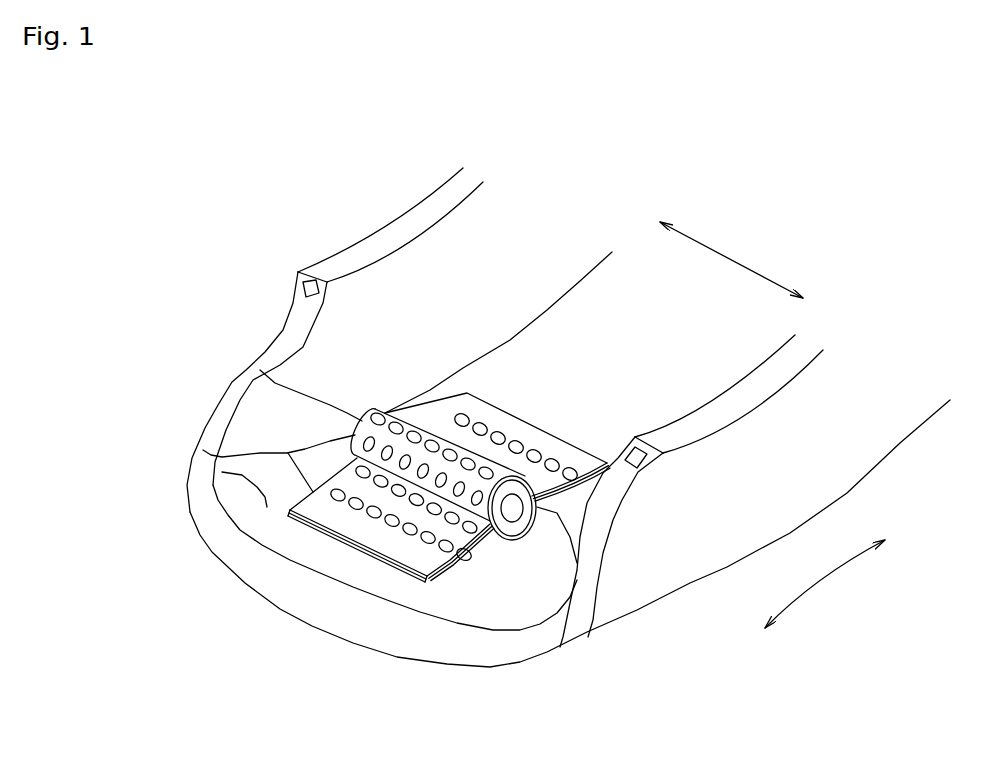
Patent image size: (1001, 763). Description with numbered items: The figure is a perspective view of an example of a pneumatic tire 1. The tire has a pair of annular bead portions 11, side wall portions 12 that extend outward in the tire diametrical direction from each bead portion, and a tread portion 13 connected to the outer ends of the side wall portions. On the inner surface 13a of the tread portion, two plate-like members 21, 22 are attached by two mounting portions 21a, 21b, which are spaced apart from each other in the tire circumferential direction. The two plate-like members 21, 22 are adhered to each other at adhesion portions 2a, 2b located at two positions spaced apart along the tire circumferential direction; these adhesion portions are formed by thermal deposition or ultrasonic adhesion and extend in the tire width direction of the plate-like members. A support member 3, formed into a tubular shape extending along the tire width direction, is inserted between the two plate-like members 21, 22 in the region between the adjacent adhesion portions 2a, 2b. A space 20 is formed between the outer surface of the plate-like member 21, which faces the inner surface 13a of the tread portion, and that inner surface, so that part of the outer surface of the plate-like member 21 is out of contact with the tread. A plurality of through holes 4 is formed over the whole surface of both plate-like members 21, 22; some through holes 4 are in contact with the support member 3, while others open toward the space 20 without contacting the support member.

The pneumatic tire 1 is at (345, 188).
The bead portion 11 is at (295, 281).
The side wall portion 12 is at (231, 381).
The tread portion 13 is at (277, 621).
The inner surface of the tread portion 13a is at (222, 472).
The adhesion portion 2a is at (260, 370).
The adhesion portion 2b is at (573, 587).
The support member 3 is at (537, 530).
The through holes 4 is at (293, 513).
The space 20 is at (513, 540).
The plate-like member 21 is at (490, 532).
The mounting portion 21a is at (410, 564).
The mounting portion 21b is at (518, 430).
The plate-like member 22 is at (203, 450).